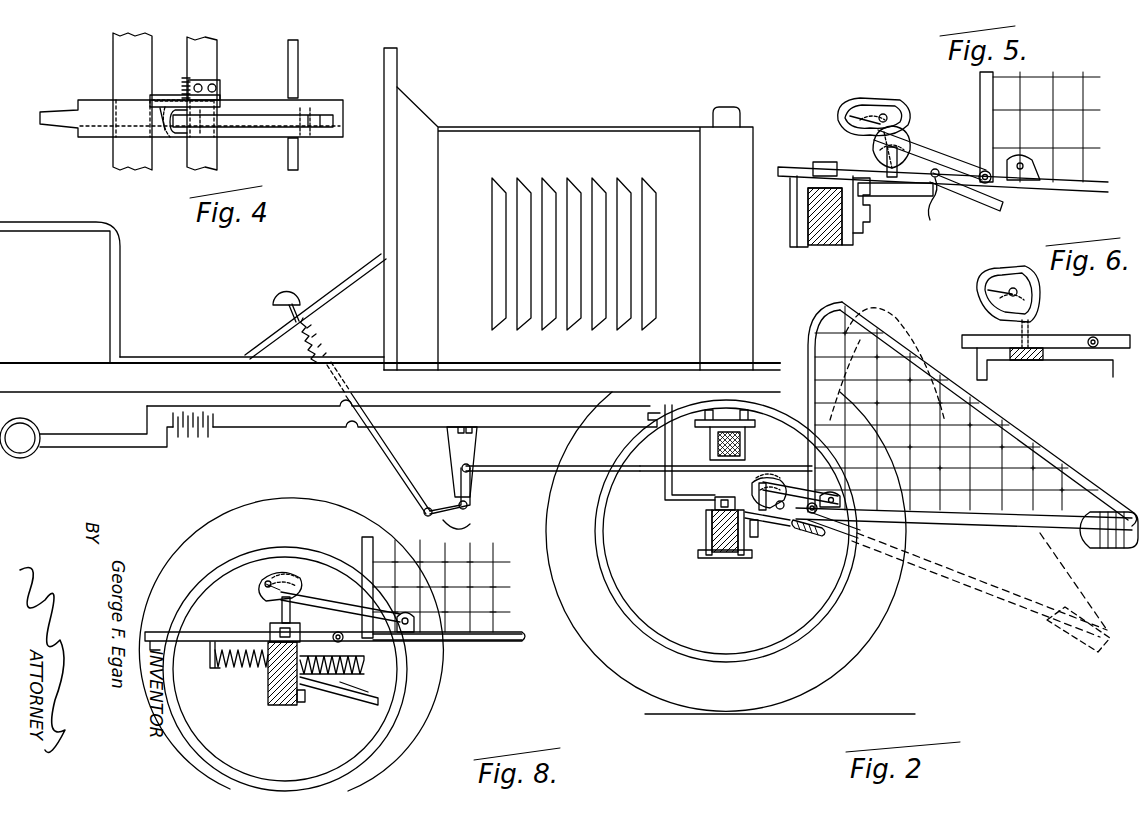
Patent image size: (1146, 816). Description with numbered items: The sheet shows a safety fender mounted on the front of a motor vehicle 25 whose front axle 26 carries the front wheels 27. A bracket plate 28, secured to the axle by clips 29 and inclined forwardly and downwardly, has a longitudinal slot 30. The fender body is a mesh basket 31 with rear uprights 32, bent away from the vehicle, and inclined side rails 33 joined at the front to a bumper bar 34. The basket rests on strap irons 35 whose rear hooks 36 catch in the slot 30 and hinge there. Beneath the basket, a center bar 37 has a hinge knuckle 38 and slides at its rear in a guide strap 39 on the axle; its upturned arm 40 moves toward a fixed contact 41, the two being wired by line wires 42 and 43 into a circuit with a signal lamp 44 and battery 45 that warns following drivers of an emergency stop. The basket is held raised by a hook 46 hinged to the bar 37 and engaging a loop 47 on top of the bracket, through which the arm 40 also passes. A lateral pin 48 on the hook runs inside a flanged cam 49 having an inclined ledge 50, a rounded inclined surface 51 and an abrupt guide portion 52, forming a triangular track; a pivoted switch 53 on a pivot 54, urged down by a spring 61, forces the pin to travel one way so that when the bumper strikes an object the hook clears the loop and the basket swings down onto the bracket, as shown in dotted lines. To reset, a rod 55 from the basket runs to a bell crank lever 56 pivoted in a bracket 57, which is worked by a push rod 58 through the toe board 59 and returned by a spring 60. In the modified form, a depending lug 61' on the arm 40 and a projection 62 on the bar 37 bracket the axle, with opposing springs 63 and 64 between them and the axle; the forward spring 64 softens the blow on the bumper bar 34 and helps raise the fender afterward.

In FIG. 2, the vehicle 25 is at (586, 130).
In FIG. 2, the front axle 26 is at (728, 556).
In FIG. 8, the front axle 26 is at (280, 704).
In FIG. 5, the front axle 26 is at (822, 240).
In FIG. 4, the front axle 26 is at (126, 60).
In FIG. 2, the front wheels 27 is at (598, 566).
In FIG. 8, the front wheels 27 is at (442, 697).
In FIG. 2, the bracket plate 28 is at (822, 540).
In FIG. 8, the bracket plate 28 is at (356, 700).
In FIG. 5, the bracket plate 28 is at (965, 200).
In FIG. 2, the clips 29 is at (710, 520).
In FIG. 5, the clips 29 is at (798, 205).
In FIG. 2, the longitudinal slot 30 is at (778, 528).
In FIG. 5, the longitudinal slot 30 is at (922, 198).
In FIG. 2, the basket 31 is at (1012, 440).
In FIG. 8, the basket 31 is at (478, 638).
In FIG. 5, the basket 31 is at (1060, 112).
In FIG. 4, the basket 31 is at (300, 54).
In FIG. 2, the uprights 32 is at (815, 338).
In FIG. 8, the uprights 32 is at (362, 548).
In FIG. 5, the uprights 32 is at (980, 96).
In FIG. 2, the side rails 33 is at (992, 416).
In FIG. 2, the bumper bar 34 is at (1110, 505).
In FIG. 2, the strap irons 35 is at (935, 525).
In FIG. 2, the hooks 36 is at (810, 534).
In FIG. 2, the center bar 37 is at (955, 560).
In FIG. 8, the center bar 37 is at (373, 642).
In FIG. 5, the center bar 37 is at (1065, 190).
In FIG. 4, the center bar 37 is at (304, 108).
In FIG. 2, the hinge knuckle 38 is at (810, 515).
In FIG. 8, the hinge knuckle 38 is at (334, 632).
In FIG. 5, the hinge knuckle 38 is at (930, 222).
In FIG. 2, the guide strap 39 is at (713, 505).
In FIG. 8, the guide strap 39 is at (270, 630).
In FIG. 5, the guide strap 39 is at (814, 165).
In FIG. 4, the guide strap 39 is at (232, 102).
In FIG. 2, the upturned arm 40 is at (666, 452).
In FIG. 8, the upturned arm 40 is at (160, 632).
In FIG. 5, the upturned arm 40 is at (780, 178).
In FIG. 6, the upturned arm 40 is at (1046, 357).
In FIG. 4, the upturned arm 40 is at (62, 112).
In FIG. 2, the fixed contact 41 is at (650, 430).
In FIG. 2, the line wire 42 is at (560, 406).
In FIG. 2, the line wire 43 is at (498, 427).
In FIG. 2, the signal lamp 44 is at (20, 428).
In FIG. 2, the battery 45 is at (200, 436).
In FIG. 2, the hook 46 is at (835, 497).
In FIG. 8, the hook 46 is at (326, 600).
In FIG. 5, the hook 46 is at (958, 150).
In FIG. 4, the hook 46 is at (268, 115).
In FIG. 2, the loop 47 is at (757, 493).
In FIG. 8, the loop 47 is at (280, 612).
In FIG. 5, the loop 47 is at (900, 153).
In FIG. 4, the loop 47 is at (205, 135).
In FIG. 2, the pin 48 is at (786, 470).
In FIG. 8, the pin 48 is at (262, 588).
In FIG. 5, the pin 48 is at (875, 148).
In FIG. 4, the pin 48 is at (170, 140).
In FIG. 2, the cam 49 is at (770, 474).
In FIG. 8, the cam 49 is at (285, 575).
In FIG. 5, the cam 49 is at (877, 100).
In FIG. 6, the cam 49 is at (1028, 266).
In FIG. 4, the cam 49 is at (168, 95).
In FIG. 5, the ledge 50 is at (860, 122).
In FIG. 6, the ledge 50 is at (998, 302).
In FIG. 5, the inclined surface 51 is at (856, 106).
In FIG. 6, the inclined surface 51 is at (1000, 270).
In FIG. 4, the inclined surface 51 is at (167, 135).
In FIG. 5, the guide portion 52 is at (900, 114).
In FIG. 6, the guide portion 52 is at (1040, 292).
In FIG. 8, the switch 53 is at (268, 582).
In FIG. 5, the switch 53 is at (848, 118).
In FIG. 6, the switch 53 is at (986, 290).
In FIG. 5, the pivot 54 is at (890, 100).
In FIG. 6, the pivot 54 is at (1040, 312).
In FIG. 4, the pivot 54 is at (186, 78).
In FIG. 2, the rod 55 is at (524, 466).
In FIG. 2, the bell crank lever 56 is at (478, 495).
In FIG. 2, the bracket 57 is at (449, 450).
In FIG. 2, the push rod 58 is at (385, 452).
In FIG. 2, the toe board 59 is at (330, 292).
In FIG. 2, the spring 60 is at (322, 336).
In FIG. 4, the spring 61 is at (221, 73).
In FIG. 8, the depending projection 61' is at (203, 671).
In FIG. 8, the projection 62 is at (370, 666).
In FIG. 8, the spring 63 is at (242, 668).
In FIG. 8, the forward spring 64 is at (338, 692).